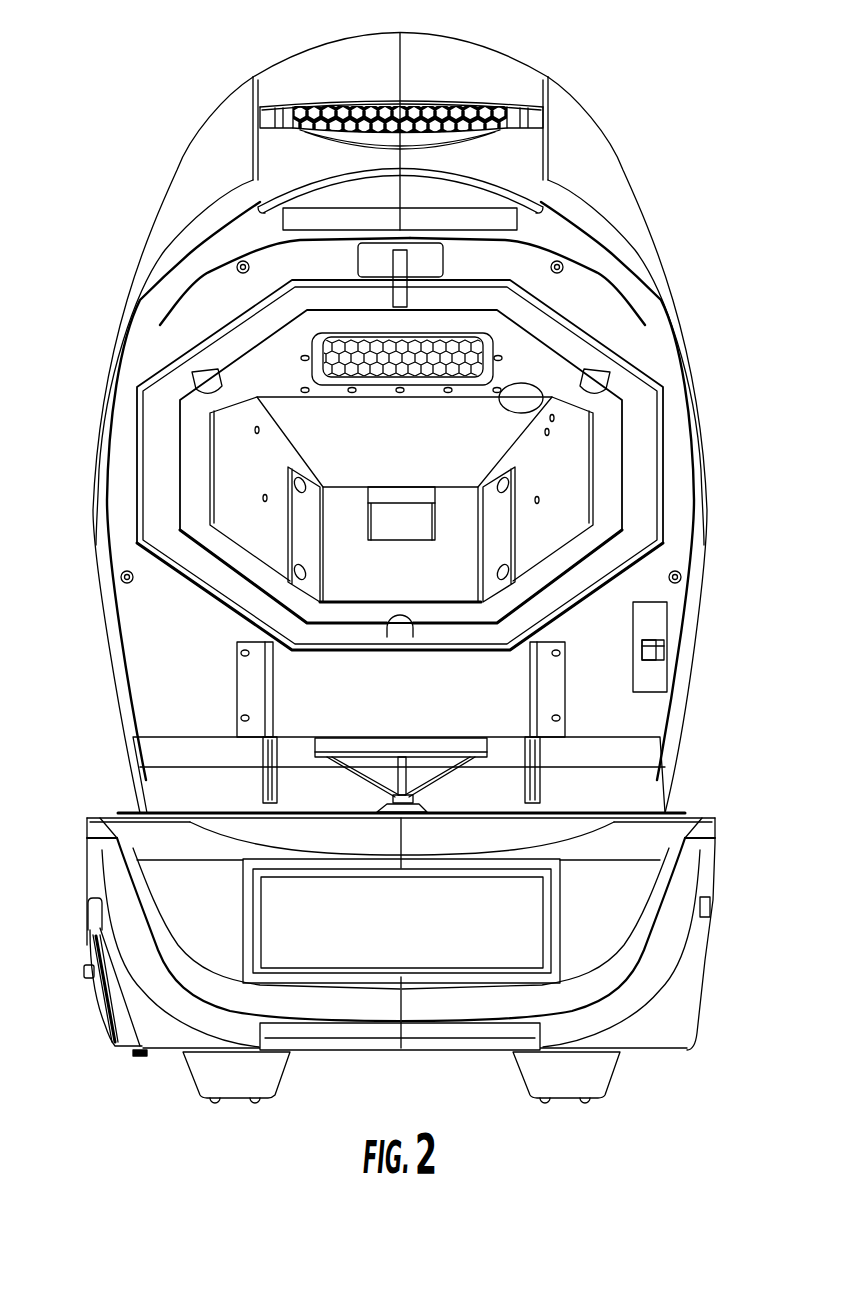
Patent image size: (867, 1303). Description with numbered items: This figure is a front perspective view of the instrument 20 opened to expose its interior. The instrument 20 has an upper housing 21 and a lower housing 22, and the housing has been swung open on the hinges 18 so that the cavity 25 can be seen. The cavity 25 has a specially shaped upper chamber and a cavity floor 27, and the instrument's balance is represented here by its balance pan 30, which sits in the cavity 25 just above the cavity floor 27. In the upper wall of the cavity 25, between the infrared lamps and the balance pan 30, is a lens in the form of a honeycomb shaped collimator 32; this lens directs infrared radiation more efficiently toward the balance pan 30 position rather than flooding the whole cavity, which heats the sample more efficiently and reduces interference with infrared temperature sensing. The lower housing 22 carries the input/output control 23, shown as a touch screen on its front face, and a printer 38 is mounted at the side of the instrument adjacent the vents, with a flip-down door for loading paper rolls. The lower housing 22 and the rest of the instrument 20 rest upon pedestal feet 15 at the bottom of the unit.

The instrument 20 is at (640, 112).
The upper housing 21 is at (645, 222).
The cavity 25 is at (563, 477).
The honeycomb shaped collimator 32 is at (437, 383).
The balance pan 30 is at (375, 744).
The hinges 18 is at (525, 762).
The cavity floor 27 is at (168, 808).
The lower housing 22 is at (708, 876).
The input/output control 23 is at (470, 937).
The printer 38 is at (95, 1007).
The pedestal feet 15 is at (603, 1069).